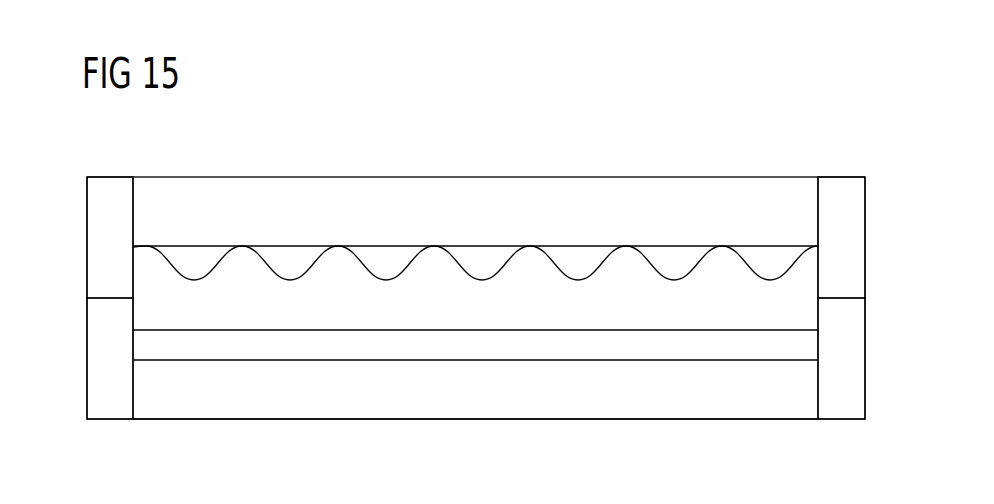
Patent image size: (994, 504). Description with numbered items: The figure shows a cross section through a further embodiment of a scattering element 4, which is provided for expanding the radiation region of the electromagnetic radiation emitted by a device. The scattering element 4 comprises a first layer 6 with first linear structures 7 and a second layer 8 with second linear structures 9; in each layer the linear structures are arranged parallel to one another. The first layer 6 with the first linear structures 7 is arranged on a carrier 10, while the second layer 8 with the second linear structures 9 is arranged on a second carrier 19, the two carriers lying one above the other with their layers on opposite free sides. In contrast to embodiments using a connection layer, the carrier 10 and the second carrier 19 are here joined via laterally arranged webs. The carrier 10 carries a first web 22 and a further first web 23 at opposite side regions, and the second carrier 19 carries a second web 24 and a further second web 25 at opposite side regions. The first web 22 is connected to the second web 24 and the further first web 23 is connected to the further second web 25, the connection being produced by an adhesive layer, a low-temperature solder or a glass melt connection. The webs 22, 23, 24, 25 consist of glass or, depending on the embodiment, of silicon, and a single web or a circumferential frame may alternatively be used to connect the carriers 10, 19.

The scattering element 4 is at (80, 157).
The first layer 6 is at (697, 280).
The first linear structures 7 is at (388, 262).
The second layer 8 is at (575, 316).
The second linear structures 9 is at (288, 338).
The carrier 10 is at (686, 196).
The second carrier 19 is at (720, 411).
The first web 22 is at (98, 240).
The further first web 23 is at (855, 241).
The second web 24 is at (98, 372).
The further second web 25 is at (855, 373).